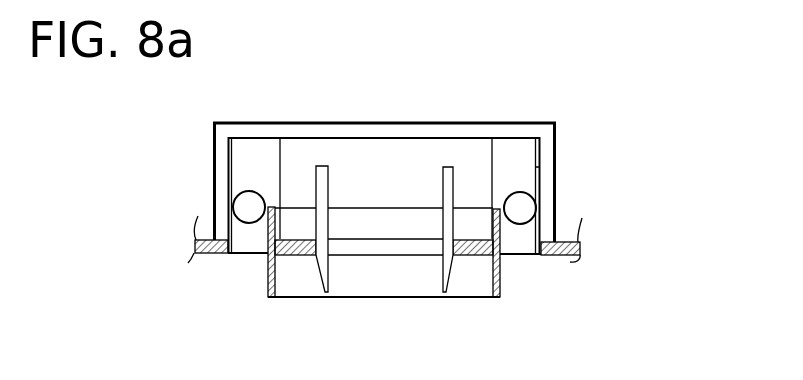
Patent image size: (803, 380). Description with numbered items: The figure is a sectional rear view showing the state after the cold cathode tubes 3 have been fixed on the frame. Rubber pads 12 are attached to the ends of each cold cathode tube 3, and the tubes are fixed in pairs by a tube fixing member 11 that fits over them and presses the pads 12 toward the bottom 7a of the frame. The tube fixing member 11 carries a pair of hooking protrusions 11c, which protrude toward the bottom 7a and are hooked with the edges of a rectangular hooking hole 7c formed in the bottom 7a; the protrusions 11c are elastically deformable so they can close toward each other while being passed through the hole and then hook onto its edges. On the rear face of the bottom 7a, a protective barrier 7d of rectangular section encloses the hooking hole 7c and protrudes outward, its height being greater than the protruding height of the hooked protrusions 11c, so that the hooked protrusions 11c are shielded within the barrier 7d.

The cold cathode tube 3 is at (242, 198).
The bottom of the frame 7a is at (570, 262).
The hooking hole 7c is at (368, 248).
The protective barrier 7d is at (268, 278).
The tube fixing member 11 is at (422, 150).
The hooking protrusion 11c is at (452, 255).
The pad 12 is at (525, 242).